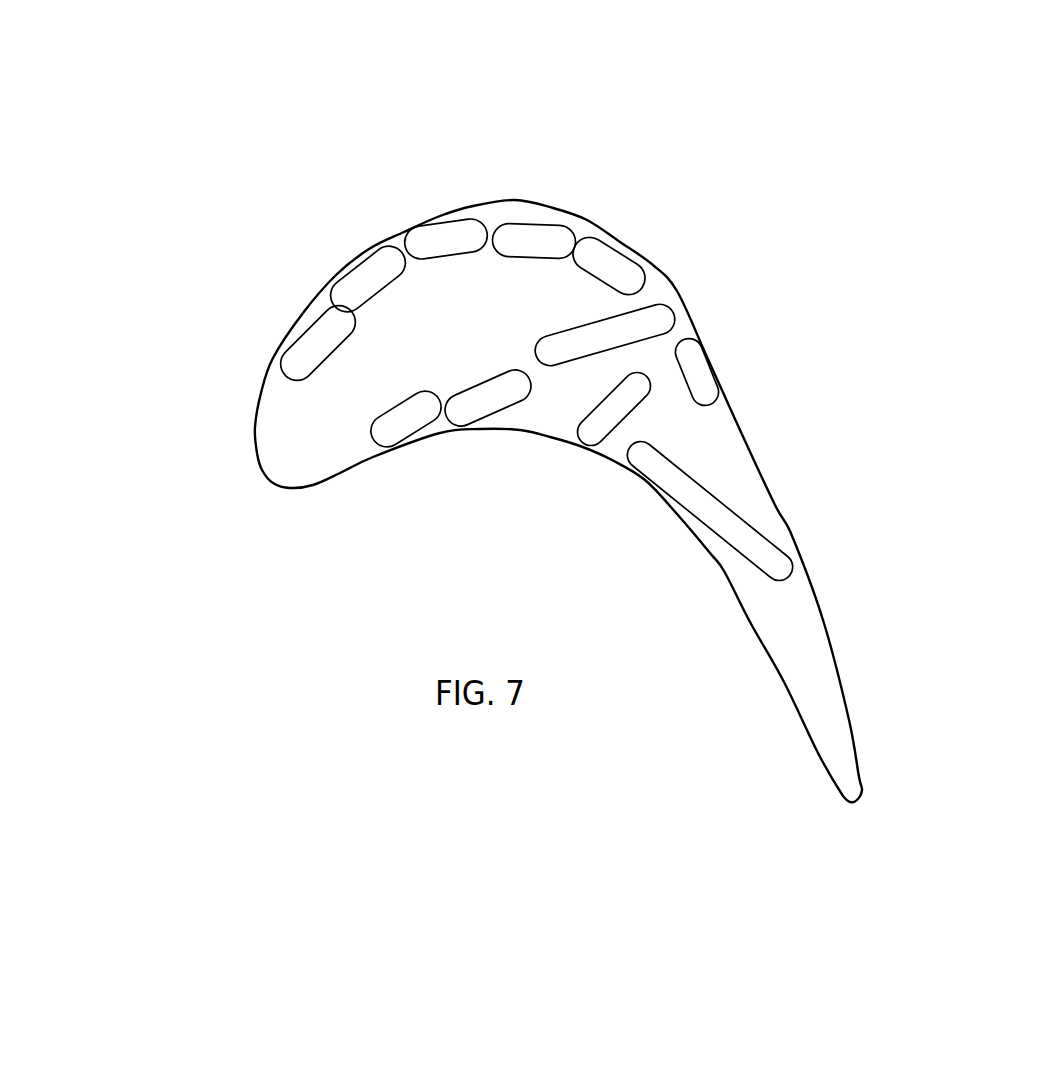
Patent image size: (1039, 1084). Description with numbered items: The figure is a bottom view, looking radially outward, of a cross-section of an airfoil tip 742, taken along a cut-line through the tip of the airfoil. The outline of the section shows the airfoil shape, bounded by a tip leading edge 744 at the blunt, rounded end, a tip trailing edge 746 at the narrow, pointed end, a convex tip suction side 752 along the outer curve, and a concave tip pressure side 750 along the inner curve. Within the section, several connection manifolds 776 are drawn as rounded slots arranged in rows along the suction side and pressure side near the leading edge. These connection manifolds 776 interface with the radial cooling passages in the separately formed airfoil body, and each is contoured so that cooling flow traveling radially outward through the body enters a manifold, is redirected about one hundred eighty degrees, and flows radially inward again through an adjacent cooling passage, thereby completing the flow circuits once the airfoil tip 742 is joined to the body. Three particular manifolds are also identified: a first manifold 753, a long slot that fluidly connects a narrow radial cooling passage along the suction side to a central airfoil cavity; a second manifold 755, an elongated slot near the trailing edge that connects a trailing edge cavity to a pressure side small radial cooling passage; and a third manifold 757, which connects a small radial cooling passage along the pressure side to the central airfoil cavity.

The airfoil tip 742 is at (205, 138).
The tip leading edge 744 is at (258, 467).
The tip trailing edge 746 is at (861, 783).
The tip pressure side 750 is at (583, 447).
The tip suction side 752 is at (663, 282).
The first manifold 753 is at (677, 315).
The second manifold 755 is at (778, 546).
The third manifold 757 is at (567, 425).
The connection manifolds 776 is at (437, 213).